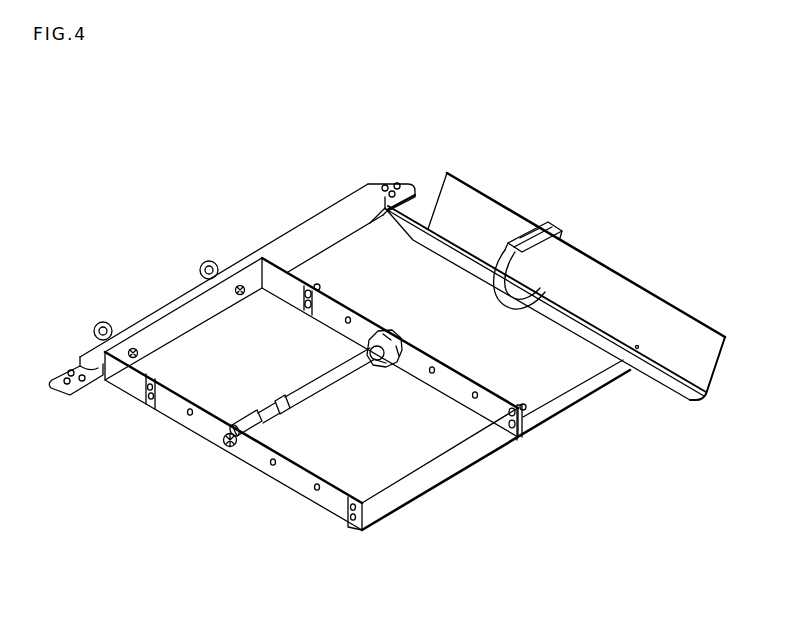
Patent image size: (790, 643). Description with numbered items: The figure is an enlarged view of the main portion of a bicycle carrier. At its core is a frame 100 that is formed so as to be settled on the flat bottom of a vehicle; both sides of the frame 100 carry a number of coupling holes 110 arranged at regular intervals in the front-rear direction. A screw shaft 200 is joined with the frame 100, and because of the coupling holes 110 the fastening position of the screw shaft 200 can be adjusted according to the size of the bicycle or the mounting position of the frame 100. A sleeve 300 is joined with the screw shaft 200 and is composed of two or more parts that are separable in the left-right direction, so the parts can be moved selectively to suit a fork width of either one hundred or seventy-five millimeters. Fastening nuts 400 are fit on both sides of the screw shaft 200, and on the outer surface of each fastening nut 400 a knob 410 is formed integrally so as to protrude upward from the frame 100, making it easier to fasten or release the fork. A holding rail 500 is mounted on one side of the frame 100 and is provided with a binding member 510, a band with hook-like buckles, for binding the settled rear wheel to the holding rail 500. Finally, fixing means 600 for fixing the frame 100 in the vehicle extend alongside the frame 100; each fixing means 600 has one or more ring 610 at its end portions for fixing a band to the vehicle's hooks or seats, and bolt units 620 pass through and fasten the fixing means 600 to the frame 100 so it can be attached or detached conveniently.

The frame 100 is at (332, 503).
The coupling holes 110 is at (275, 463).
The screw shaft 200 is at (222, 443).
The sleeve 300 is at (297, 397).
The fastening nuts 400 is at (370, 367).
The knob 410 is at (395, 337).
The holding rail 500 is at (480, 197).
The binding member 510 is at (548, 225).
The fixing means 600 is at (300, 235).
The ring 610 is at (397, 183).
The bolt units 620 is at (203, 262).